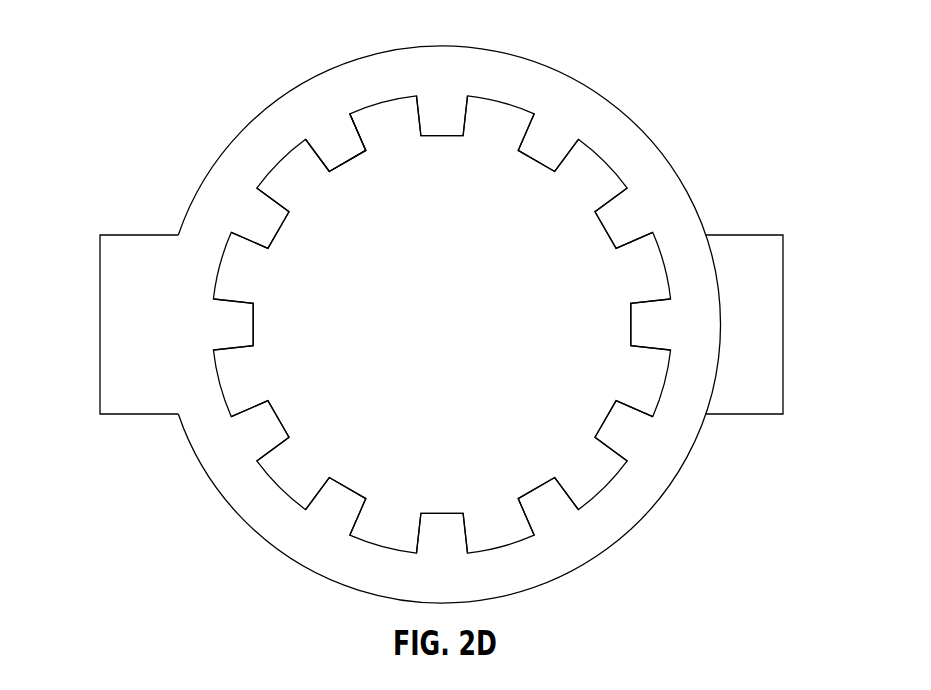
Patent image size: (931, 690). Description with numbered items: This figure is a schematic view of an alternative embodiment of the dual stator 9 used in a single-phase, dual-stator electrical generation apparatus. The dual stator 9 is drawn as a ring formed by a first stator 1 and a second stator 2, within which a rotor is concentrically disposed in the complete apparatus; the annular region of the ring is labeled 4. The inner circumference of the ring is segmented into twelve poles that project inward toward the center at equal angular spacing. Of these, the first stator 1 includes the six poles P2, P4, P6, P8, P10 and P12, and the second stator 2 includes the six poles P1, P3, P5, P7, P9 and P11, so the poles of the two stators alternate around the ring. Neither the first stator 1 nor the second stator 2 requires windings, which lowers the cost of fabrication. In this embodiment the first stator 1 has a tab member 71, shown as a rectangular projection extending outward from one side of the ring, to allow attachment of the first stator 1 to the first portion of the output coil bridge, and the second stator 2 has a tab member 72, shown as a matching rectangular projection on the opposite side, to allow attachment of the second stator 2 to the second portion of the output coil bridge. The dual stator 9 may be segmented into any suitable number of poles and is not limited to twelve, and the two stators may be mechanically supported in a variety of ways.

The first stator 1 is at (362, 125).
The second stator 2 is at (640, 120).
The ring body 4 is at (701, 144).
The dual stator 9 is at (334, 50).
The tab member 71 is at (788, 324).
The tab member 72 is at (98, 333).
The pole P1 is at (442, 116).
The pole P2 is at (548, 143).
The pole P3 is at (624, 218).
The pole P4 is at (651, 324).
The pole P5 is at (624, 431).
The pole P6 is at (548, 507).
The pole P7 is at (442, 533).
The pole P8 is at (336, 507).
The pole P9 is at (260, 431).
The pole P10 is at (233, 324).
The pole P11 is at (260, 218).
The pole P12 is at (336, 143).